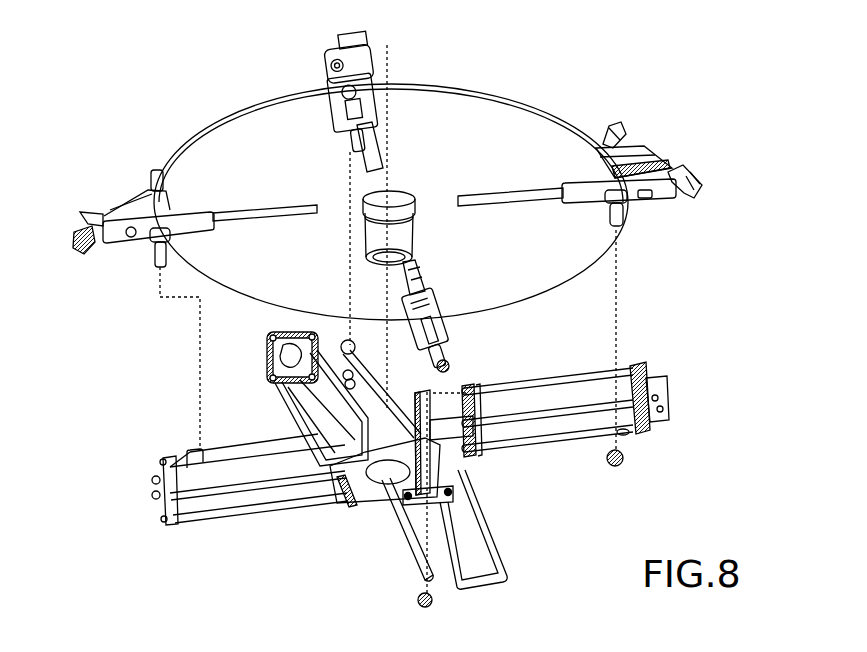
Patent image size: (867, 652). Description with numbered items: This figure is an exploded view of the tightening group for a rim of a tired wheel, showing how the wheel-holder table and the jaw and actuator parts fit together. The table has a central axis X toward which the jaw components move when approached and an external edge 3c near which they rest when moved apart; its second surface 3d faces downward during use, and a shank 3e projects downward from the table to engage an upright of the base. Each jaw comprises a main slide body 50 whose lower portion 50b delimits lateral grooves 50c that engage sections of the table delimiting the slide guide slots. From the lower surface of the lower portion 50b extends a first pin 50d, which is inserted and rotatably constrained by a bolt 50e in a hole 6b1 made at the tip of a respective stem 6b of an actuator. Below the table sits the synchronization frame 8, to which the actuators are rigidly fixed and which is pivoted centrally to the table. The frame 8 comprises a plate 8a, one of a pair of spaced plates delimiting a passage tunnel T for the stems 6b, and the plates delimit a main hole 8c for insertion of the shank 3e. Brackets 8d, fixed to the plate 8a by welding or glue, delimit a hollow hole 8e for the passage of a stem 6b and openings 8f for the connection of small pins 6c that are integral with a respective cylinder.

The central axis X is at (388, 63).
The external edge 3c is at (500, 102).
The second surface 3d is at (217, 147).
The shank 3e is at (407, 238).
The main slide body 50 is at (650, 160).
The lower portion 50b is at (633, 146).
The lateral grooves 50c is at (672, 166).
The first pin 50d is at (627, 217).
The bolt 50e is at (621, 466).
The stem 6b is at (533, 447).
The hole 6b1 is at (625, 436).
The small pins 6c is at (490, 452).
The frame 8 is at (418, 398).
The plate 8a is at (373, 497).
The main hole 8c is at (383, 487).
The brackets 8d is at (433, 395).
The hollow hole 8e is at (473, 410).
The openings 8f is at (445, 507).
The passage tunnel T is at (452, 480).